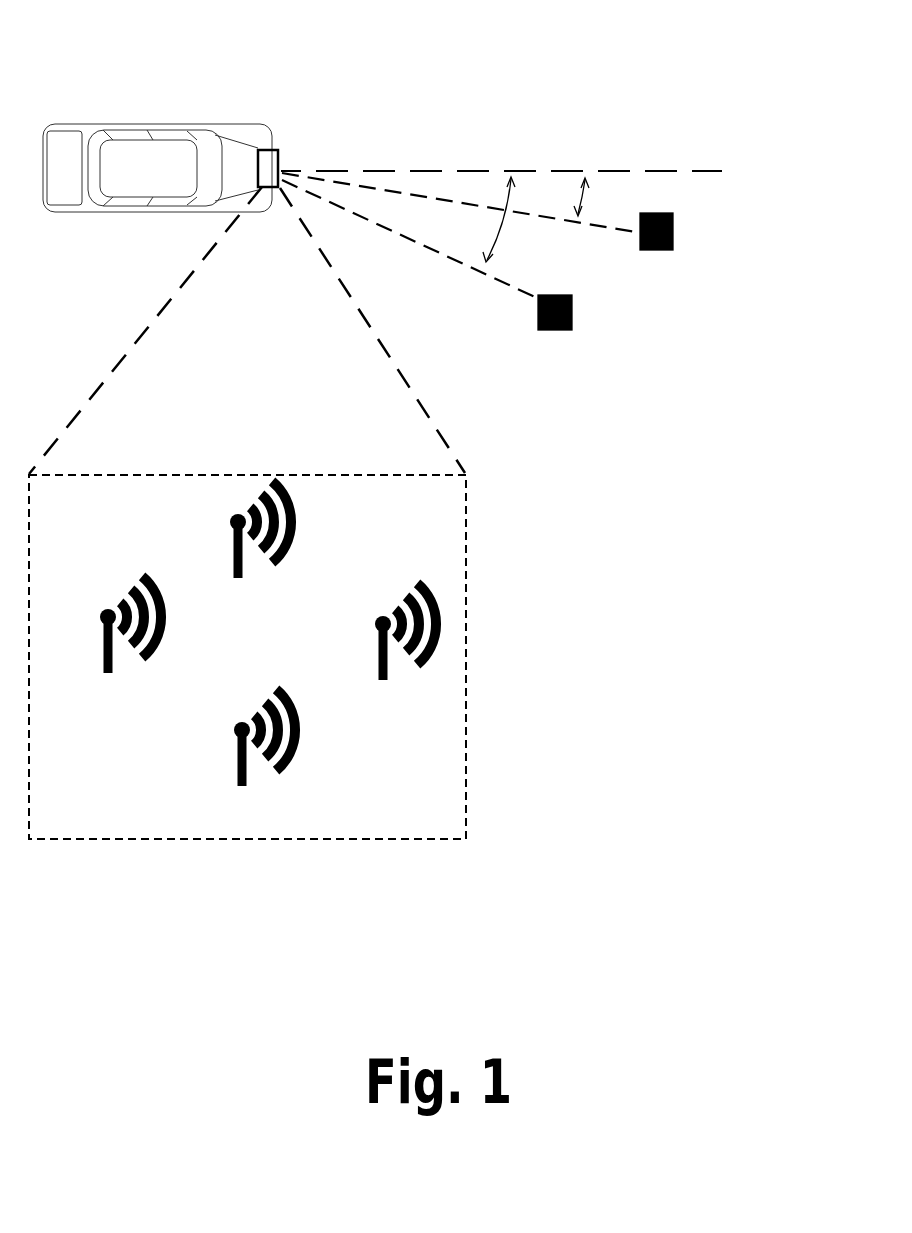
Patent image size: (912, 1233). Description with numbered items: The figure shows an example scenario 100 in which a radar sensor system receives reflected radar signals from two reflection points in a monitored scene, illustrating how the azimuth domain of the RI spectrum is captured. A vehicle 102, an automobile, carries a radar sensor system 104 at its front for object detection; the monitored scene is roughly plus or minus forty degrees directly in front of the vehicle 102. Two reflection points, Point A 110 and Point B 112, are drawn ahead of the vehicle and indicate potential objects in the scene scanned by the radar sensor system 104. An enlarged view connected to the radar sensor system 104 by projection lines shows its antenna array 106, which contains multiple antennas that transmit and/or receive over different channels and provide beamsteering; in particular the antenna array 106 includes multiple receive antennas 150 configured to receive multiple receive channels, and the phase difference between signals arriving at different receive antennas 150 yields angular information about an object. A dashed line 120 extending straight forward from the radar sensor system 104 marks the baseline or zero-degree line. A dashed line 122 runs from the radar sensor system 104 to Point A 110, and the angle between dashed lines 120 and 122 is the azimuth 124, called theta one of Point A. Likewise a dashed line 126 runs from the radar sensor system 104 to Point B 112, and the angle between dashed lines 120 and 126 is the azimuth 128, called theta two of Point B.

The example scenario 100 is at (118, 42).
The vehicle 102 is at (103, 206).
The radar sensor system 104 is at (282, 150).
The antenna array 106 is at (466, 775).
The Point A 110 is at (673, 236).
The Point B 112 is at (571, 330).
The dashed line 120 is at (707, 171).
The dashed line 122 is at (483, 207).
The azimuth 124 is at (577, 186).
The dashed line 126 is at (383, 227).
The azimuth 128 is at (498, 240).
The receive antennas 150 is at (146, 764).